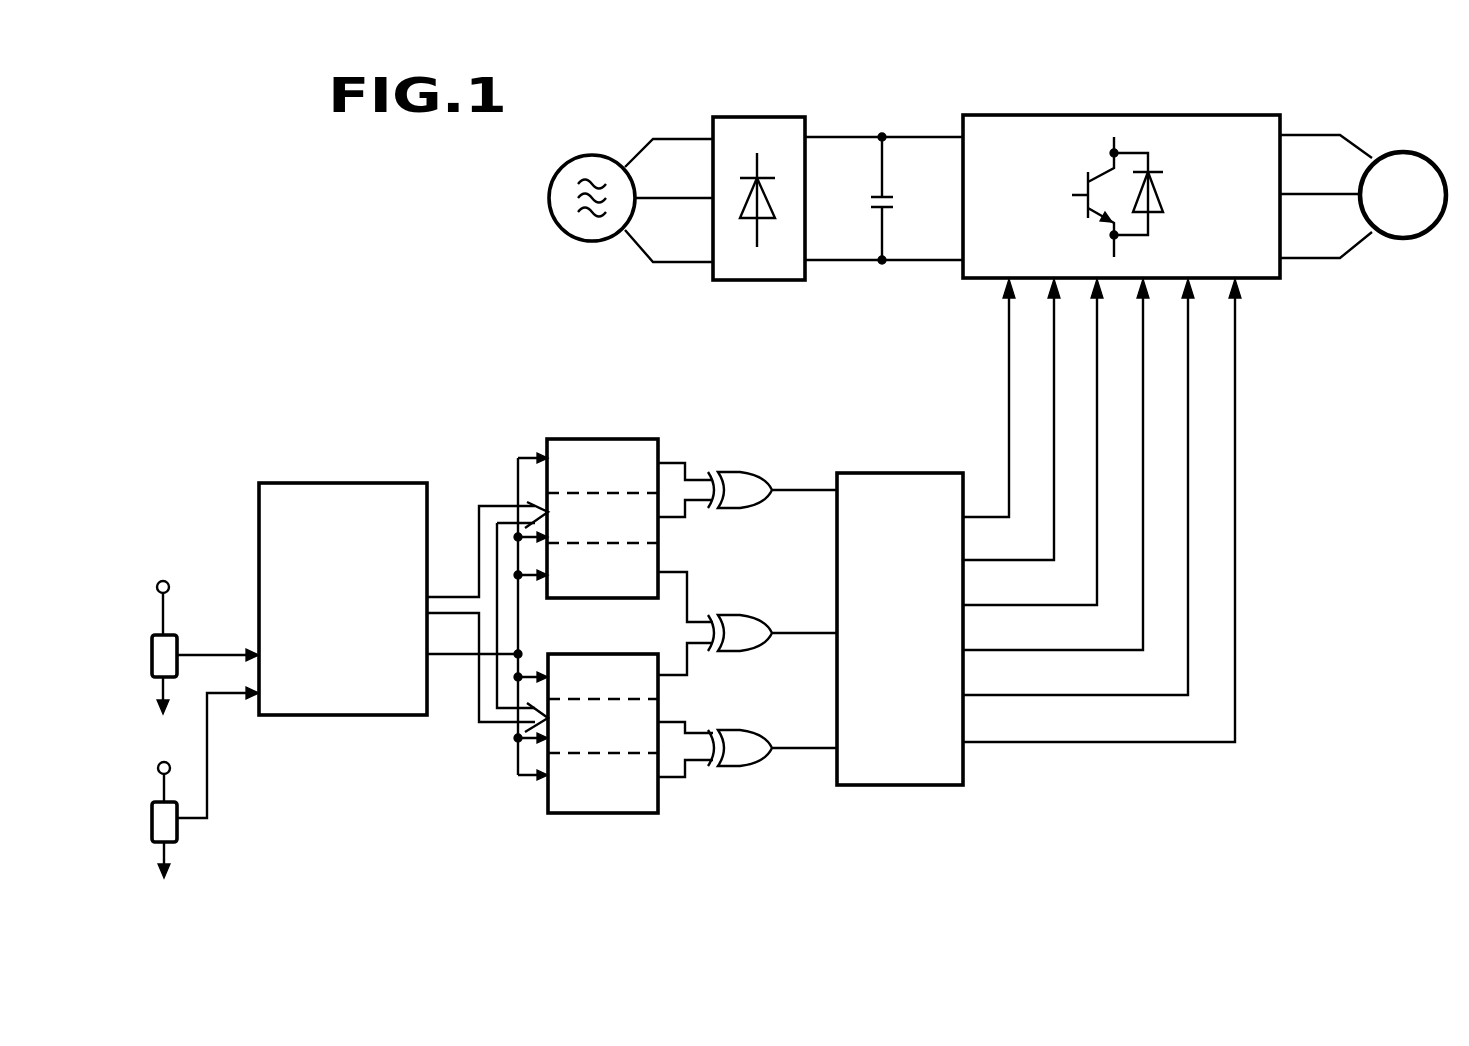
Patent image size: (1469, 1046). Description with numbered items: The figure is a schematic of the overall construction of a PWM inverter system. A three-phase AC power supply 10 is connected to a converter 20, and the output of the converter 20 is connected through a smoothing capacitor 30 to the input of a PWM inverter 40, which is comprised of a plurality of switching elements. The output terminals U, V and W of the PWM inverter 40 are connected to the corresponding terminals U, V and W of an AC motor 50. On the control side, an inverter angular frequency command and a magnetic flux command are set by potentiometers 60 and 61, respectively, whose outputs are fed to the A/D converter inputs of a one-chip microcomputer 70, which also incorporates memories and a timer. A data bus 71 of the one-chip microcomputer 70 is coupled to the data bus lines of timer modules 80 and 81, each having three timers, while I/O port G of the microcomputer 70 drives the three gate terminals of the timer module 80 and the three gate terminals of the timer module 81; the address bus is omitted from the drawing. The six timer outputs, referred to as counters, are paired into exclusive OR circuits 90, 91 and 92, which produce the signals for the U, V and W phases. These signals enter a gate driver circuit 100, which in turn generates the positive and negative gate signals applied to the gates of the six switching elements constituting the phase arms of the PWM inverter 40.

The three-phase AC power supply 10 is at (588, 242).
The converter 20 is at (727, 281).
The smoothing capacitor 30 is at (903, 199).
The PWM inverter 40 is at (1063, 115).
The AC motor 50 is at (1412, 152).
The potentiometer 60 is at (150, 657).
The potentiometer 61 is at (150, 826).
The one-chip microcomputer 70 is at (408, 483).
The data bus 71 is at (475, 716).
The timer module 80 is at (640, 439).
The timer module 81 is at (633, 814).
The exclusive OR circuit 90 is at (736, 471).
The exclusive OR circuit 91 is at (740, 614).
The exclusive OR circuit 92 is at (736, 730).
The gate driver circuit 100 is at (936, 473).